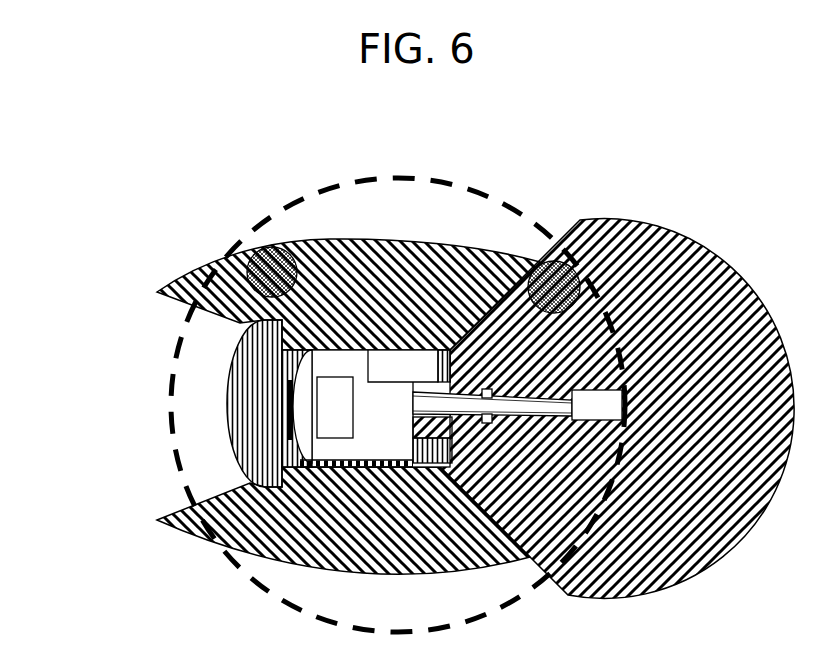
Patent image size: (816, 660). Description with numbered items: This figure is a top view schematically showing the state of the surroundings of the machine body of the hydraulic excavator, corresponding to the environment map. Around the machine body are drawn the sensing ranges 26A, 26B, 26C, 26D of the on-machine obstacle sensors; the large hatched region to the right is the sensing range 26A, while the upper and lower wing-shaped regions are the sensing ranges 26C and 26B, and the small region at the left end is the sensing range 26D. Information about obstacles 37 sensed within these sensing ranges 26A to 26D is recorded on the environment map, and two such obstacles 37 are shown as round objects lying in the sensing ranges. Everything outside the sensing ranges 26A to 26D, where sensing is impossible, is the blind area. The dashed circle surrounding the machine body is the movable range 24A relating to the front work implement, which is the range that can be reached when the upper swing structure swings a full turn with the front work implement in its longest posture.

The sensing range 26A is at (668, 416).
The sensing range 26B is at (355, 538).
The sensing range 26C is at (355, 308).
The sensing range 26D is at (237, 423).
The obstacle 37 is at (270, 258).
The movable range 24A is at (172, 450).